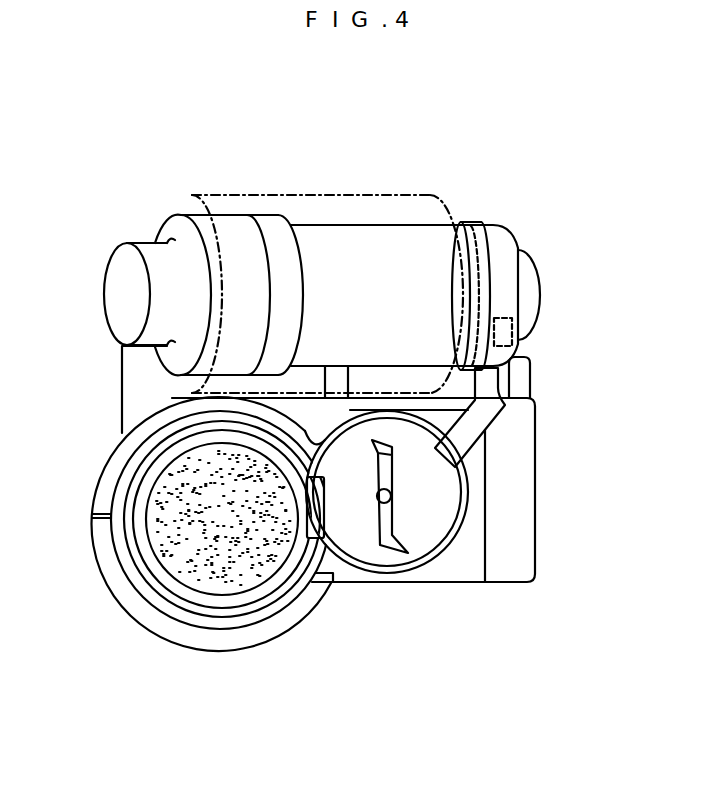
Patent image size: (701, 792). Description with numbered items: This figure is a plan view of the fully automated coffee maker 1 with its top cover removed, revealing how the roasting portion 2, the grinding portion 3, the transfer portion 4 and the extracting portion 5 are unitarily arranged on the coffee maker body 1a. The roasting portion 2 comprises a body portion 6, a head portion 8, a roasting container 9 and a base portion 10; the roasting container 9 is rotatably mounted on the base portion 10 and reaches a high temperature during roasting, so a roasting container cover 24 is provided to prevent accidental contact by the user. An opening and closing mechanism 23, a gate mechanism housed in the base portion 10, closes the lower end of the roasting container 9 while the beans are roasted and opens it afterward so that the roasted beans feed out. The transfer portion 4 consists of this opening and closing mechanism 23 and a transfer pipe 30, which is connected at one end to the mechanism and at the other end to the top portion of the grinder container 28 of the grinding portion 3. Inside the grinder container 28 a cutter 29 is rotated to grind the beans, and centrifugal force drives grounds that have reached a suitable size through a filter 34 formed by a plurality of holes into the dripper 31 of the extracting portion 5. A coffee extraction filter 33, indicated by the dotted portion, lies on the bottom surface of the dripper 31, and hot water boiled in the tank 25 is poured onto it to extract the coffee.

The coffee maker 1 is at (427, 135).
The coffee maker body 1a is at (522, 543).
The roasting portion 2 is at (108, 356).
The grinding portion 3 is at (394, 556).
The transfer portion 4 is at (522, 423).
The extracting portion 5 is at (275, 622).
The body portion 6 is at (130, 385).
The head portion 8 is at (148, 245).
The roasting container 9 is at (357, 236).
The base portion 10 is at (495, 245).
The opening and closing mechanism 23 is at (513, 334).
The roasting container cover 24 is at (271, 192).
The tank 25 is at (519, 383).
The grinder container 28 is at (452, 543).
The cutter 29 is at (388, 529).
The transfer pipe 30 is at (489, 418).
The dripper 31 is at (173, 602).
The coffee extraction filter 33 is at (167, 562).
The filter 34 is at (316, 503).